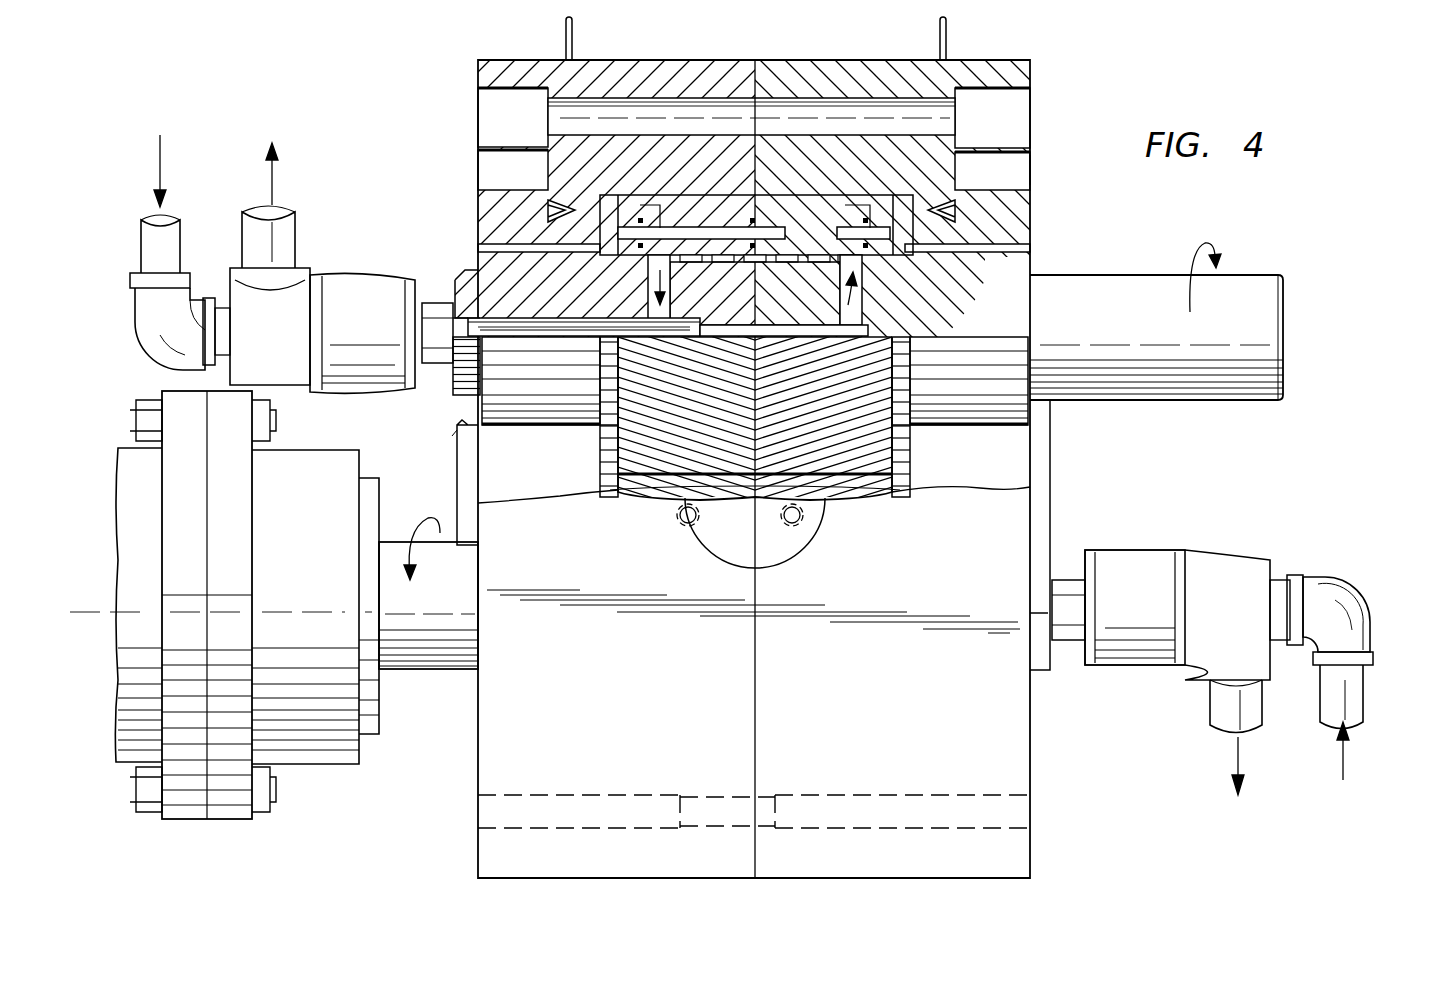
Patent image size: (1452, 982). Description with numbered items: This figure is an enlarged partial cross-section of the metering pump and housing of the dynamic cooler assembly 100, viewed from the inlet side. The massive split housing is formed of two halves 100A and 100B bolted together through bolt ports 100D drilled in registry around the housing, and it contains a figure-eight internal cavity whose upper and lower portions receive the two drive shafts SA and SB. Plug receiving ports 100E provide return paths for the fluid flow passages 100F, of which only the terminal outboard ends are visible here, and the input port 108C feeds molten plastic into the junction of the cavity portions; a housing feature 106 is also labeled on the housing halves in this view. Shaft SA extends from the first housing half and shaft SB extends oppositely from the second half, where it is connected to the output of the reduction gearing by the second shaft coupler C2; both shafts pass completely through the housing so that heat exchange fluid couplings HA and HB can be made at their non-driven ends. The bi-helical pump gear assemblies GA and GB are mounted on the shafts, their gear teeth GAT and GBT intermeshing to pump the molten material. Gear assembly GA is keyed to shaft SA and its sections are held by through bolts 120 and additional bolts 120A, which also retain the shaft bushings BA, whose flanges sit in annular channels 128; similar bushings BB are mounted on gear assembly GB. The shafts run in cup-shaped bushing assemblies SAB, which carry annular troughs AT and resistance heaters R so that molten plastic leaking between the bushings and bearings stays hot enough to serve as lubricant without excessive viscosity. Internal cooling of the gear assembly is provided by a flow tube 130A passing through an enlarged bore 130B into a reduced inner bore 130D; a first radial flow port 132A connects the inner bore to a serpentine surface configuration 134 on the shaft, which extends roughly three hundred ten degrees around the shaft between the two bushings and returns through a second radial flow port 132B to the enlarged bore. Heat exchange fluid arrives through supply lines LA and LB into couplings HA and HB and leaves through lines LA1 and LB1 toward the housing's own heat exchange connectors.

The dynamic cooler assembly 100 is at (788, 47).
The first housing half 100A is at (684, 710).
The second housing half 100B is at (887, 710).
The bolt ports 100D is at (805, 112).
The plug receiving ports 100E is at (1032, 178).
The fluid flow passages 100F is at (565, 205).
The housing boss 106 is at (462, 483).
The input port 108C is at (795, 560).
The through bolts 120 is at (690, 235).
The additional bolts 120A is at (838, 222).
The annular troughs or channels 128 is at (624, 205).
The flow tube 130A is at (486, 312).
The enlarged diameter bore 130B is at (548, 312).
The inner bore 130D is at (768, 330).
The first radial flow port 132A is at (854, 287).
The second radial flow port 132B is at (672, 290).
The serpentine surface configuration 134 is at (786, 246).
The annular troughs AT is at (536, 242).
The shaft bushings BA is at (555, 268).
The shaft bushings BB is at (603, 478).
The second shaft coupler C2 is at (242, 556).
The pump gear assembly GA is at (870, 372).
The gear teeth GAT is at (870, 398).
The pump gear assembly GB is at (866, 500).
The gear teeth GBT is at (650, 498).
The heat exchange fluid coupling HA is at (380, 330).
The heat exchange fluid coupling HB is at (1160, 618).
The first supply line LA is at (170, 258).
The outlet line LA1 is at (285, 245).
The second supply line LB is at (1365, 700).
The outlet line LB1 is at (1215, 700).
The electric resistance heaters R is at (512, 240).
The input shaft SA is at (1120, 326).
The cup-shaped bushing assembly SAB is at (505, 244).
The input shaft SB is at (446, 613).